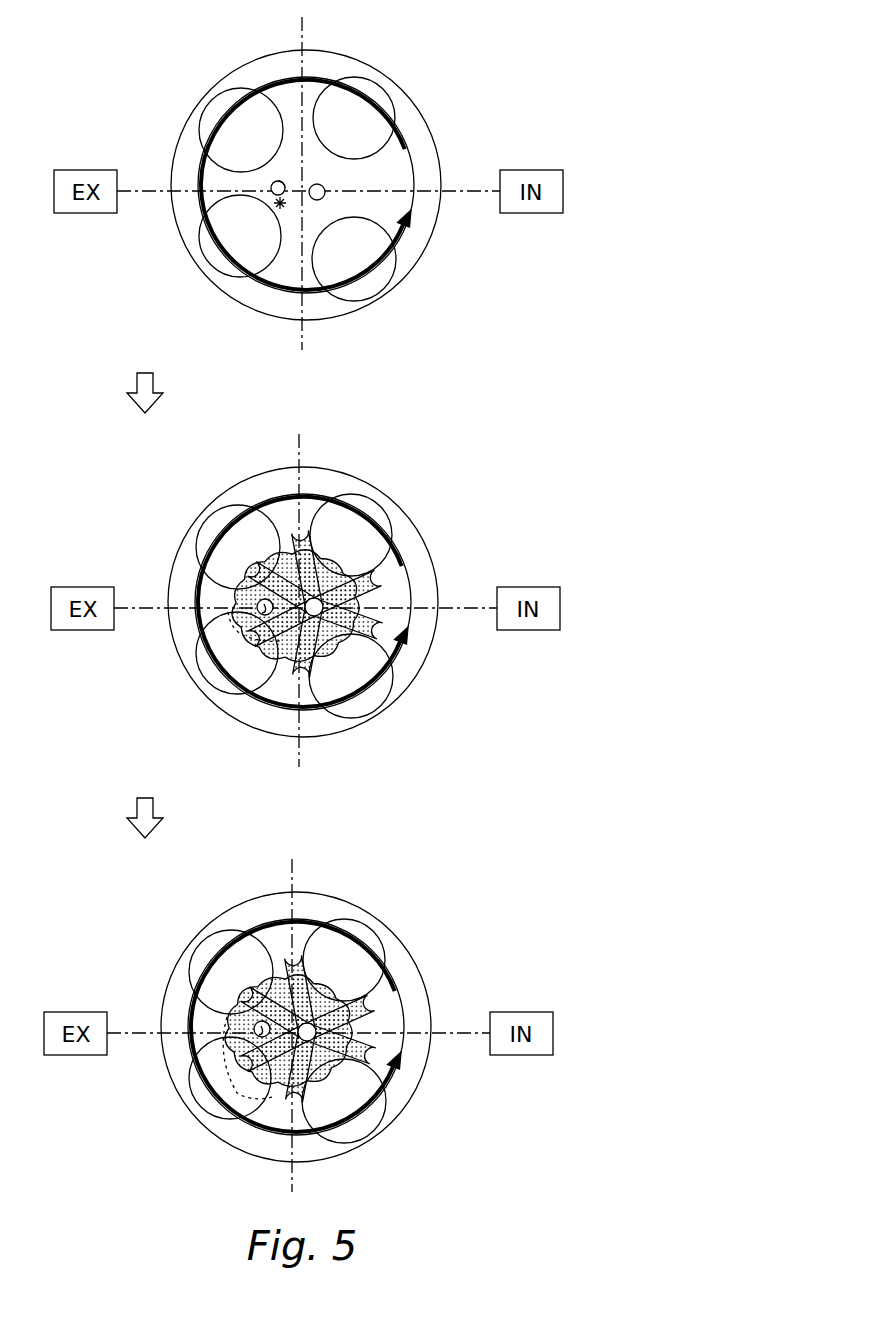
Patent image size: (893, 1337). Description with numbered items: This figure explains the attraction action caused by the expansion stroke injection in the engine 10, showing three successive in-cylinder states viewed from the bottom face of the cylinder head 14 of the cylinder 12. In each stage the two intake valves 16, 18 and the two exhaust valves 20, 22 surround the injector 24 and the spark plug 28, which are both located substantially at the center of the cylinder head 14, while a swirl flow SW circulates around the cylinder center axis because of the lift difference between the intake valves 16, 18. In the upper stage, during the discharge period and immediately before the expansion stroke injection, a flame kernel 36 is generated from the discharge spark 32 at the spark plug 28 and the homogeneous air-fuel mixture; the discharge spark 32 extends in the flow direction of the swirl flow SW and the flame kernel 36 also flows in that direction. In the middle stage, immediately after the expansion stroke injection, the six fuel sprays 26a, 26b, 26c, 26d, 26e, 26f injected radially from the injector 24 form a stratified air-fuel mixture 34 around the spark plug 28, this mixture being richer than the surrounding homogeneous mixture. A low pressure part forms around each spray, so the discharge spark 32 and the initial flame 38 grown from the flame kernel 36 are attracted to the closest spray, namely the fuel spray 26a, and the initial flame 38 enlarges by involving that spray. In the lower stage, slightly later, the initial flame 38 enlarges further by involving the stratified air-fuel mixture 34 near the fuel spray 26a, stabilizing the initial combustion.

The internal combustion engine 10 is at (444, 111).
The cylinder 12 is at (410, 273).
The cylinder head 14 is at (428, 160).
The intake valve 16 is at (383, 277).
The intake valve 18 is at (372, 88).
The exhaust valve 20 is at (227, 270).
The exhaust valve 22 is at (213, 107).
The injector 24 is at (317, 184).
The fuel spray 26a is at (247, 647).
The fuel spray 26b is at (293, 690).
The fuel spray 26c is at (390, 633).
The fuel spray 26d is at (397, 577).
The fuel spray 26e is at (300, 525).
The fuel spray 26f is at (247, 565).
The spark plug 28 is at (280, 181).
The discharge spark 32 is at (270, 189).
The stratified air-fuel mixture 34 is at (227, 573).
The flame kernel 36 is at (283, 208).
The initial flame 38 is at (270, 650).
The swirl flow SW is at (408, 147).